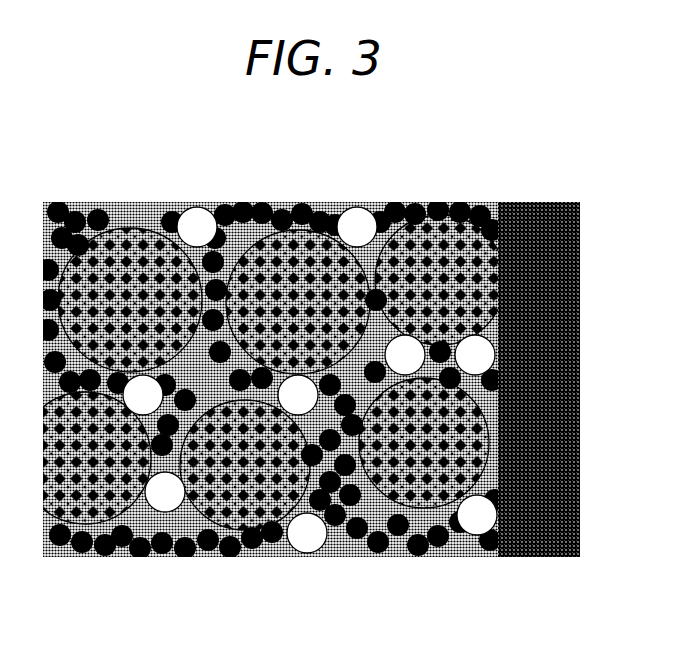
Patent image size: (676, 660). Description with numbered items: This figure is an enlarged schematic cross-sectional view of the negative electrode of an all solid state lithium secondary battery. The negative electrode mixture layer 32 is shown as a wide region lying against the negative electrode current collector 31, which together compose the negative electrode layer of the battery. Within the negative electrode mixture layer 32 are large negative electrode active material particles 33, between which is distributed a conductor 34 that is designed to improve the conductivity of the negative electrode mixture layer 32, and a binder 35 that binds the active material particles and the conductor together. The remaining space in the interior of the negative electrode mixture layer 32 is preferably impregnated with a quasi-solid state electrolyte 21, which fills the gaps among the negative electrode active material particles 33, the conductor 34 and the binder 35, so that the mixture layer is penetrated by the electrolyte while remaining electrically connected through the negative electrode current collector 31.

The quasi-solid state electrolyte 21 is at (112, 222).
The negative electrode current collector 31 is at (497, 186).
The negative electrode mixture layer 32 is at (45, 567).
The negative electrode active material particles 33 is at (432, 247).
The conductor 34 is at (222, 212).
The binder 35 is at (355, 220).